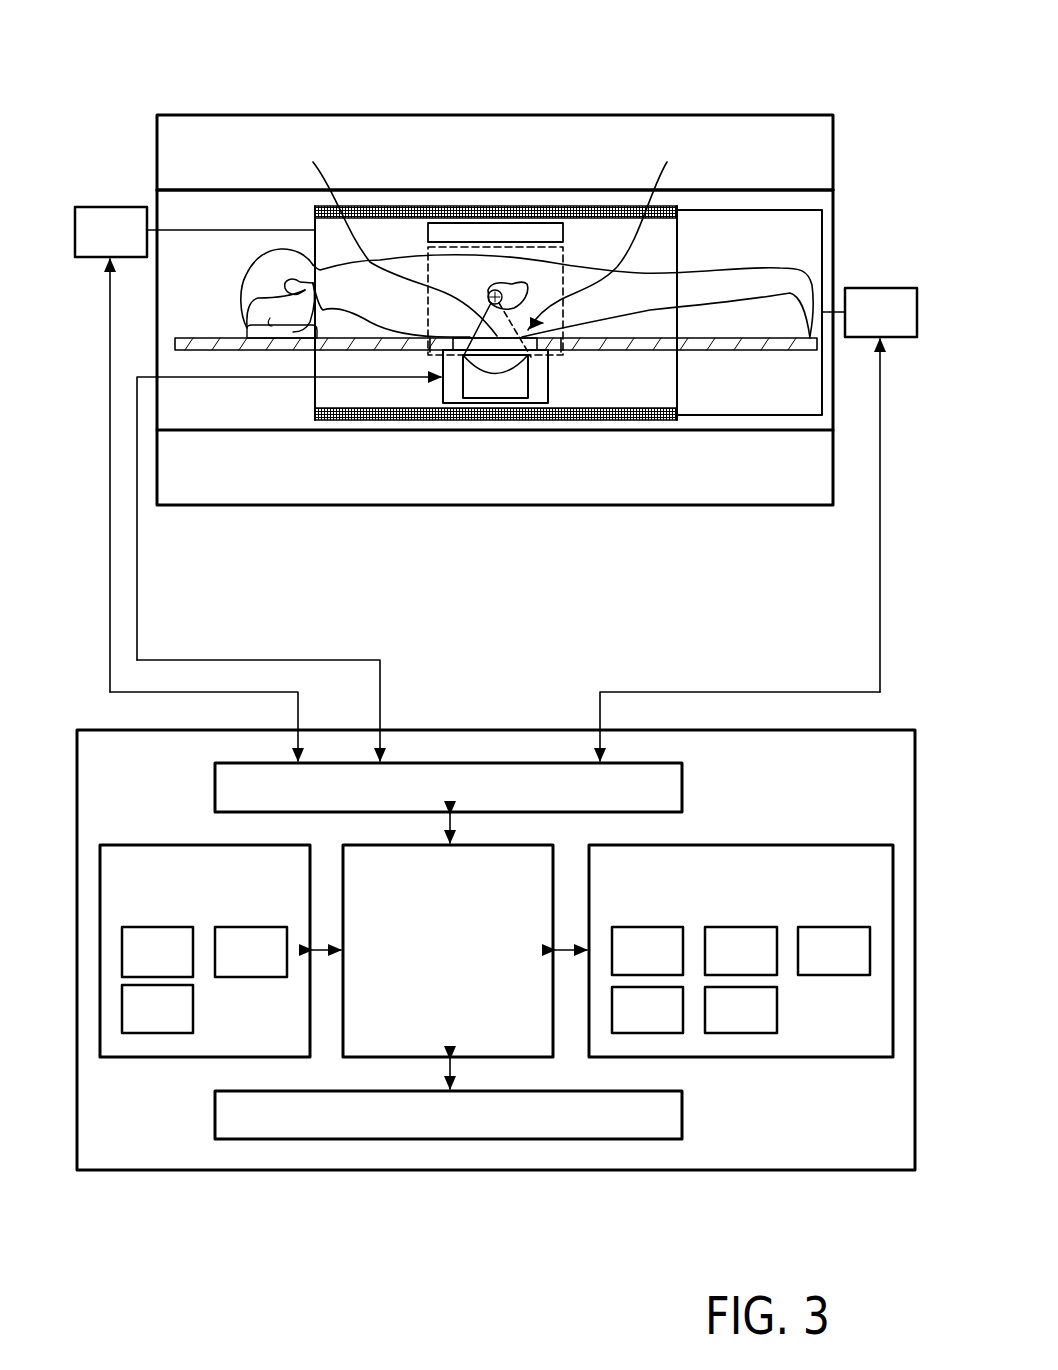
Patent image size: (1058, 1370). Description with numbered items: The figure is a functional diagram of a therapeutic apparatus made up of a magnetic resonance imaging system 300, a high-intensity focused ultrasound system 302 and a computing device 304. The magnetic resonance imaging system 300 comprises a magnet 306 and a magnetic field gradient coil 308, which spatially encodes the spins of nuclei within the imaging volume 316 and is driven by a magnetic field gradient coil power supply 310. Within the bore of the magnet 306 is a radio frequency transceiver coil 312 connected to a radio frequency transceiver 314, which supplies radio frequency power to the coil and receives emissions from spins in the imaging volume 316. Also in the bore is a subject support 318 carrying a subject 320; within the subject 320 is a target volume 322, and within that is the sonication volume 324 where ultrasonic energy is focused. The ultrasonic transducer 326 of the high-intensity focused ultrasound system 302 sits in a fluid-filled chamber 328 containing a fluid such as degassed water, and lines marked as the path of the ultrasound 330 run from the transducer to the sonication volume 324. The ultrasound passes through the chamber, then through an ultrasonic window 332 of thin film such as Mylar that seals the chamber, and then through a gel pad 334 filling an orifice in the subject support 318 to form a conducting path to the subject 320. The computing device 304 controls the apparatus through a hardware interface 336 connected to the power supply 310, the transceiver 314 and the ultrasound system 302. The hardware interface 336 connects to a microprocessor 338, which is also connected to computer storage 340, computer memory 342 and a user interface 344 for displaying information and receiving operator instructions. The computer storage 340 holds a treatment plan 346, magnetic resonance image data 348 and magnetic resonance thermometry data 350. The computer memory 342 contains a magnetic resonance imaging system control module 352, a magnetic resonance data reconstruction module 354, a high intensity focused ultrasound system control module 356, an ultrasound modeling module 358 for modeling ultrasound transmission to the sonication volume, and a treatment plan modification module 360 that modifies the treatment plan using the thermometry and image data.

The magnetic resonance imaging system 300 is at (616, 102).
The high-intensity focused ultrasound system 302 is at (569, 373).
The computing device 304 is at (778, 1170).
The magnet 306 is at (778, 130).
The magnetic field gradient coil 308 is at (316, 208).
The magnetic field gradient coil power supply 310 is at (903, 327).
The radio frequency transceiver coil 312 is at (420, 193).
The radio frequency transceiver 314 is at (133, 247).
The imaging volume 316 is at (564, 249).
The subject support 318 is at (213, 342).
The subject 320 is at (257, 270).
The target volume 322 is at (522, 283).
The sonication volume 324 is at (438, 228).
The ultrasonic transducer 326 is at (478, 388).
The fluid-filled chamber 328 is at (452, 395).
The path of the ultrasound 330 is at (495, 232).
The ultrasonic window 332 is at (505, 366).
The gel pad 334 is at (536, 347).
The hardware interface 336 is at (682, 788).
The microprocessor 338 is at (470, 1025).
The computer storage 340 is at (153, 845).
The computer memory 342 is at (838, 845).
The user interface 344 is at (682, 1115).
The treatment plan 346 is at (179, 967).
The magnetic resonance image data 348 is at (272, 967).
The magnetic resonance thermometry data 350 is at (179, 1024).
The magnetic resonance imaging system control module 352 is at (669, 966).
The magnetic resonance data reconstruction module 354 is at (762, 966).
The high intensity focused ultrasound system control module 356 is at (855, 966).
The ultrasound modeling module 358 is at (669, 1025).
The treatment plan modification module 360 is at (762, 1025).